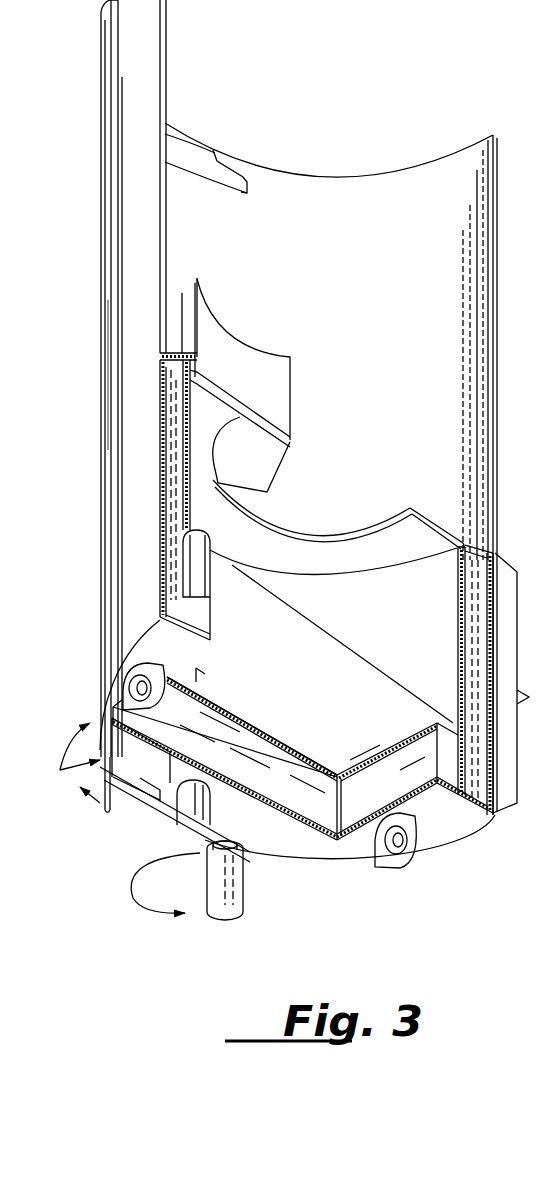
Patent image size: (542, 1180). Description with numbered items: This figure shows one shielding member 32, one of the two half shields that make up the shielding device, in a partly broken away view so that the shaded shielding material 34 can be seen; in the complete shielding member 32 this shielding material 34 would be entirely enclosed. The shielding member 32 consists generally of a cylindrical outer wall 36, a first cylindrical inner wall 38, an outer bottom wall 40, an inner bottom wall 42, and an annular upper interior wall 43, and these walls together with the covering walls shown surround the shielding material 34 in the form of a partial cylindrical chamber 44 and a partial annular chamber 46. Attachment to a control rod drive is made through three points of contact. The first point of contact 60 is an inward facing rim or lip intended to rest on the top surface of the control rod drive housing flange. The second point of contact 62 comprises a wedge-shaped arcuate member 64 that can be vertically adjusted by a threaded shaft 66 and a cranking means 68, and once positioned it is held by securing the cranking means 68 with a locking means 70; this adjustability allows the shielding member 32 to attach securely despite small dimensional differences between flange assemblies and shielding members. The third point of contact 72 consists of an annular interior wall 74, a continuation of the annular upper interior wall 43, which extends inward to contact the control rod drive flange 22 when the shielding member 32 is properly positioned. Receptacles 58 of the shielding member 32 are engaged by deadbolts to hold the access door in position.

The control rod drive flange 22 is at (351, 407).
The shielding member 32 is at (90, 232).
The shielding material 34 is at (178, 593).
The cylindrical outer wall 36 is at (104, 373).
The first cylindrical inner wall 38 is at (456, 612).
The outer bottom wall 40 is at (281, 830).
The inner bottom wall 42 is at (294, 740).
The annular upper interior wall 43 is at (476, 526).
The partial cylindrical chamber 44 is at (517, 683).
The partial annular chamber 46 is at (352, 646).
The receptacles 58 is at (121, 689).
The first point of contact 60 is at (203, 142).
The second point of contact 62 is at (250, 330).
The wedge-shaped arcuate member 64 is at (187, 298).
The threaded shaft 66 is at (200, 672).
The cranking means 68 is at (180, 820).
The locking means 70 is at (60, 770).
The third point of contact 72 is at (307, 518).
The annular interior wall 74 is at (431, 503).